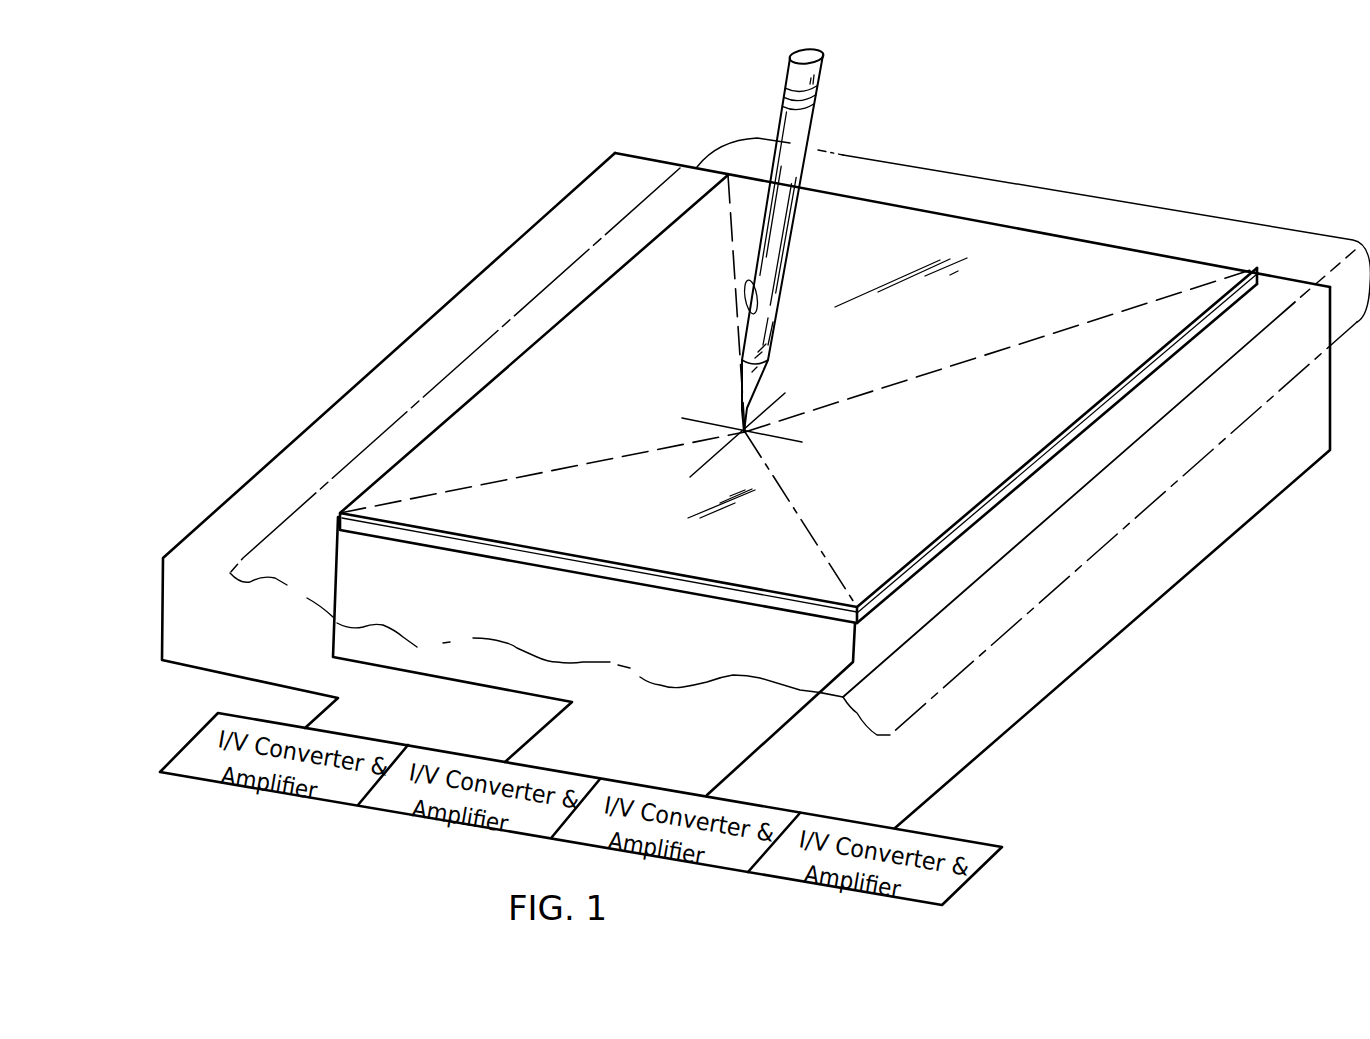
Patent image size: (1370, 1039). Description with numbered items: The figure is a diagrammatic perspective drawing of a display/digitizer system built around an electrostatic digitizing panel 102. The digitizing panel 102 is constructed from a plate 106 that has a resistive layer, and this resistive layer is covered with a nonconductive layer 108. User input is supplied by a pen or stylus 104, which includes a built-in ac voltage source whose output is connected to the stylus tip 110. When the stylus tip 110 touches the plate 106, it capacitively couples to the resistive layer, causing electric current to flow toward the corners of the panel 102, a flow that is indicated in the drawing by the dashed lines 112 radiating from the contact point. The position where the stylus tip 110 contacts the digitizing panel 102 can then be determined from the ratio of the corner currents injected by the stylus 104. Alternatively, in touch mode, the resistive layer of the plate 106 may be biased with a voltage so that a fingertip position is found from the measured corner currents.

The electrostatic digitizing panel 102 is at (967, 510).
The pen or stylus 104 is at (800, 127).
The plate 106 is at (678, 583).
The nonconductive layer 108 is at (560, 552).
The stylus tip 110 is at (733, 422).
The dashed lines 112 is at (960, 360).